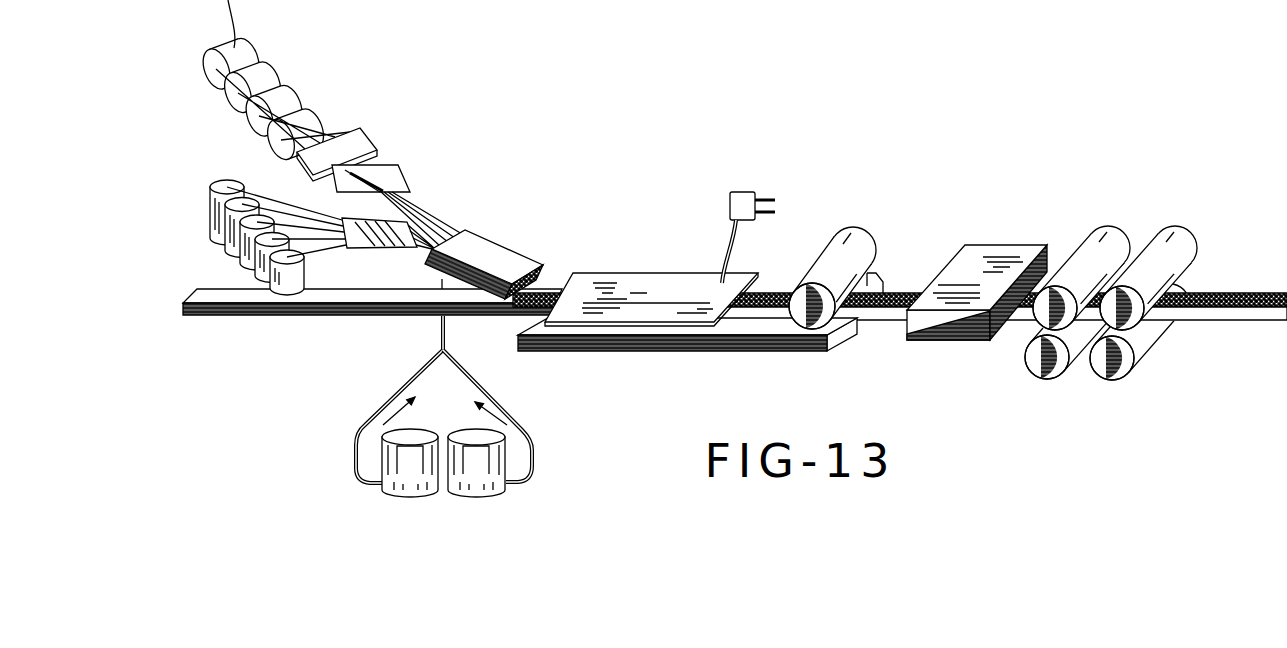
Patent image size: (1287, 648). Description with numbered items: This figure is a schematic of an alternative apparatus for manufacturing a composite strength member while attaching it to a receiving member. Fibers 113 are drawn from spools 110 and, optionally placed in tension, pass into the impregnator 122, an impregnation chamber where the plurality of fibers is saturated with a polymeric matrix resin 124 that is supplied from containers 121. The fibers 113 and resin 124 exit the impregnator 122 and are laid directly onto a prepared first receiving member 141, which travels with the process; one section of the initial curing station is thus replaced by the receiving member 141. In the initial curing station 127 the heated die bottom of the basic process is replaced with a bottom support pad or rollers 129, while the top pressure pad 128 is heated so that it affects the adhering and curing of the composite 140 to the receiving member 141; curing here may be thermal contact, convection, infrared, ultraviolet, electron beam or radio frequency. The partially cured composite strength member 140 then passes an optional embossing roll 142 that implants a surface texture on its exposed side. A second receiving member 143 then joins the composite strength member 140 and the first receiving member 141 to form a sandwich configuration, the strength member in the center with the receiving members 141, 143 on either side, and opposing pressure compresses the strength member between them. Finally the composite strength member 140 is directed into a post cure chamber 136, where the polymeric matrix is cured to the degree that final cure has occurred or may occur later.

The fiber spools 110 is at (210, 228).
The fibers 113 is at (268, 198).
The resin containers 121 is at (393, 512).
The impregnator 122 is at (497, 257).
The resin 124 is at (460, 382).
The initial curing station 127 is at (724, 364).
The top pressure pad 128 is at (675, 285).
The bottom support pad or rollers 129 is at (658, 342).
The post cure chamber 136 is at (963, 275).
The composite strength member 140 is at (1237, 293).
The first receiving member 141 is at (266, 318).
The embossing roll 142 is at (835, 263).
The second receiving member 143 is at (1254, 197).